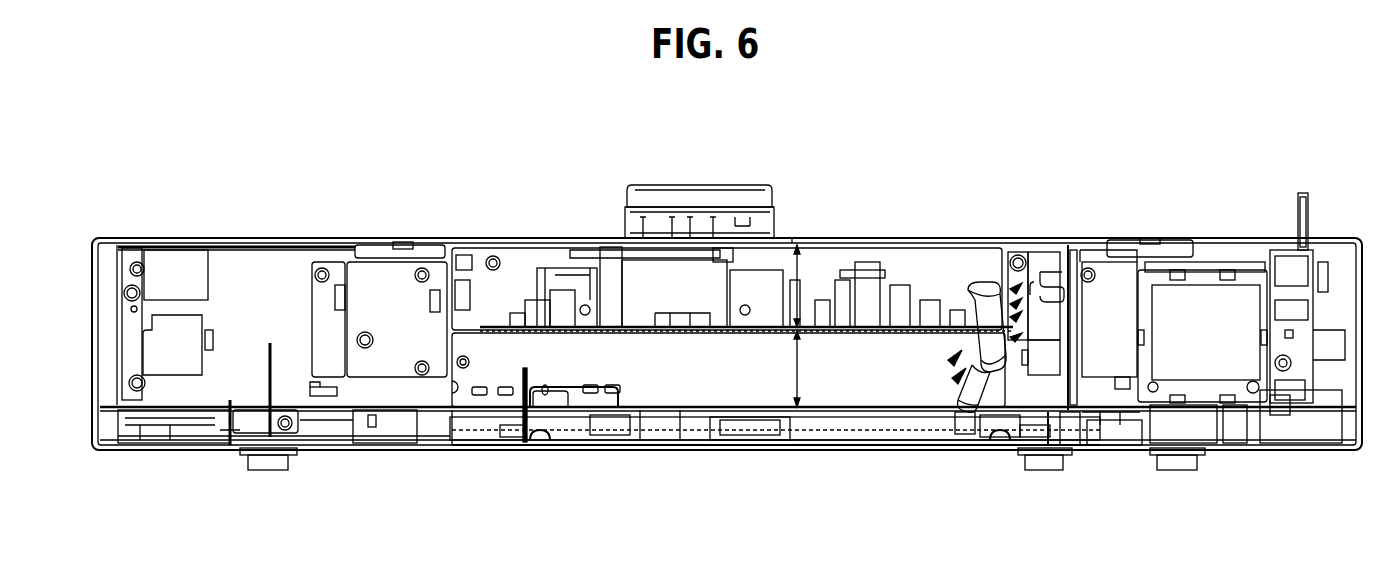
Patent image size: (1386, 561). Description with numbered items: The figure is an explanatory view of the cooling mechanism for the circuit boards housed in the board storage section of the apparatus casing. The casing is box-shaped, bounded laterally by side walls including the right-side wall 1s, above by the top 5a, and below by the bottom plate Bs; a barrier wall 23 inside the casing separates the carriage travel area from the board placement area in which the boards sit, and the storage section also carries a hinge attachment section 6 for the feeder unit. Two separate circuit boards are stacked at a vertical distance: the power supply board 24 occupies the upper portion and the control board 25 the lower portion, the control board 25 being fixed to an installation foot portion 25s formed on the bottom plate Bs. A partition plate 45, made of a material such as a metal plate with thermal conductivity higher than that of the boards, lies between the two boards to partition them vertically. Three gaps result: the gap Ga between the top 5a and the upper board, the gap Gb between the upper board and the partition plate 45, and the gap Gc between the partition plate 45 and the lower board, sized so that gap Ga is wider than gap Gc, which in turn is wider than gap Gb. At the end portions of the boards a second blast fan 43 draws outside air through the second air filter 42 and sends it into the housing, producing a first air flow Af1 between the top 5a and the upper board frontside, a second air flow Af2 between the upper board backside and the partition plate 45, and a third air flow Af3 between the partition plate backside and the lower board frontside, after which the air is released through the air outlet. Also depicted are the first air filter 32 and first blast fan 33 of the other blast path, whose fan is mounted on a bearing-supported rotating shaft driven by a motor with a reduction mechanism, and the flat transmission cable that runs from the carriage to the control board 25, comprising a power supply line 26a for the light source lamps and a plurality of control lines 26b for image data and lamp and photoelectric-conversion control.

The right-side wall 1s is at (94, 268).
The top of the casing 5a is at (279, 244).
The hinge attachment section 6 is at (385, 250).
The barrier wall 23 is at (668, 400).
The power supply board 24 is at (653, 327).
The control board 25 is at (840, 432).
The installation foot portion 25s is at (540, 443).
The power supply line 26a is at (540, 393).
The control lines 26b is at (581, 388).
The first air filter 32 is at (1205, 280).
The first blast fan 33 is at (1243, 300).
The second air filter 42 is at (1110, 295).
The second blast fan 43 is at (1050, 256).
The partition plate 45 is at (683, 340).
The first air flow Af1 is at (1015, 255).
The second air flow Af2 is at (948, 334).
The third air flow Af3 is at (935, 372).
The gap Ga is at (811, 286).
The gap Gb is at (794, 338).
The gap Gc is at (809, 369).
The bottom plate Bs is at (1078, 445).